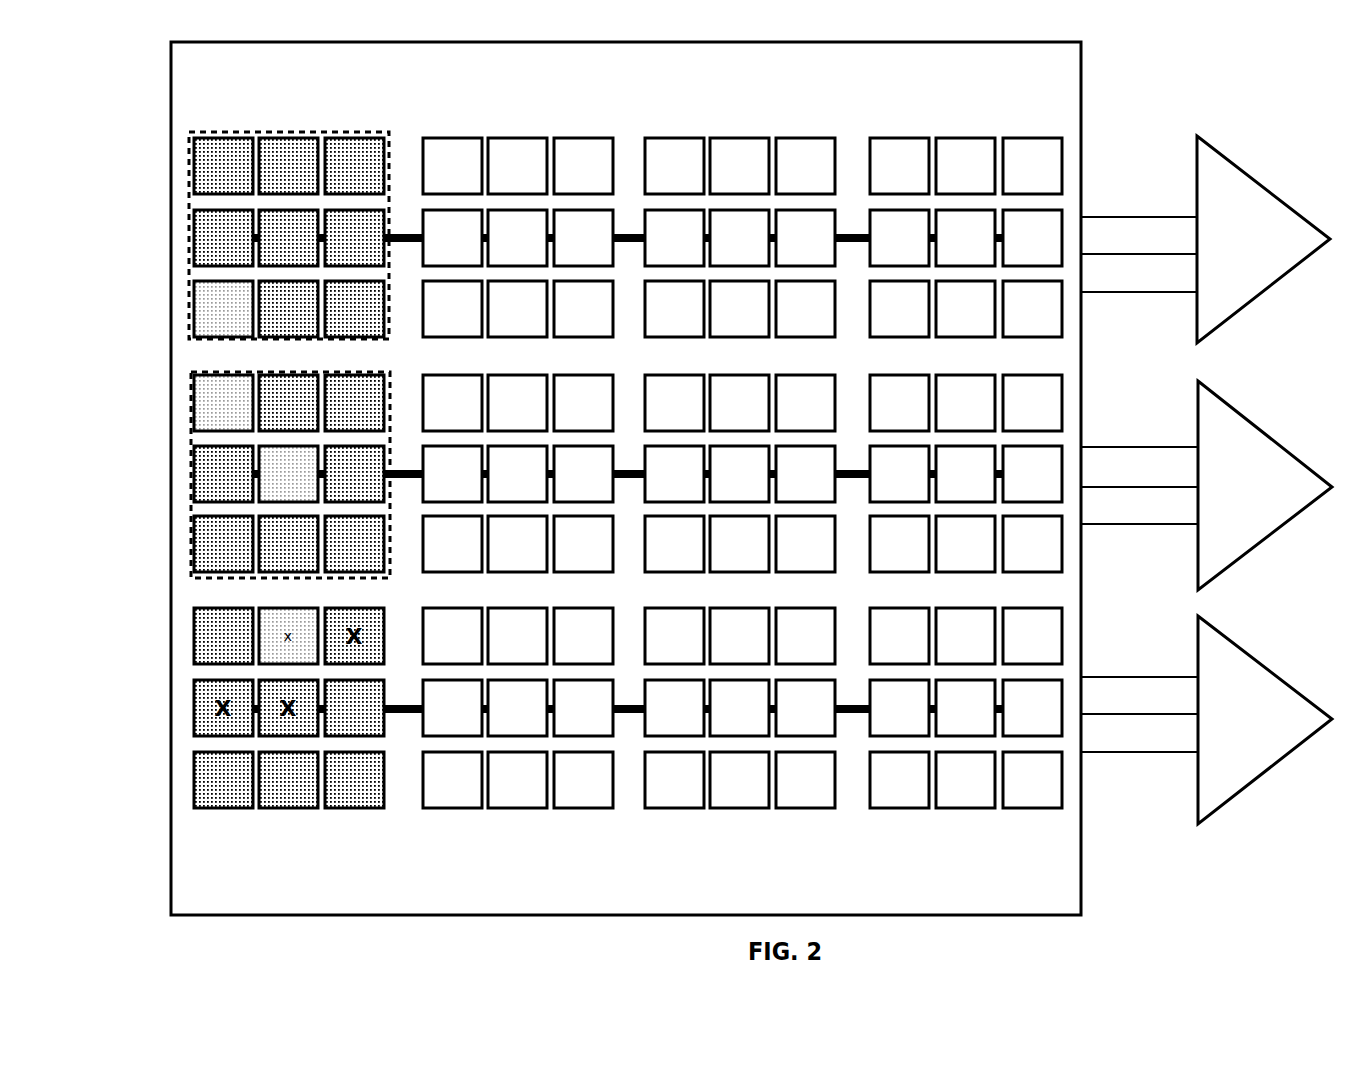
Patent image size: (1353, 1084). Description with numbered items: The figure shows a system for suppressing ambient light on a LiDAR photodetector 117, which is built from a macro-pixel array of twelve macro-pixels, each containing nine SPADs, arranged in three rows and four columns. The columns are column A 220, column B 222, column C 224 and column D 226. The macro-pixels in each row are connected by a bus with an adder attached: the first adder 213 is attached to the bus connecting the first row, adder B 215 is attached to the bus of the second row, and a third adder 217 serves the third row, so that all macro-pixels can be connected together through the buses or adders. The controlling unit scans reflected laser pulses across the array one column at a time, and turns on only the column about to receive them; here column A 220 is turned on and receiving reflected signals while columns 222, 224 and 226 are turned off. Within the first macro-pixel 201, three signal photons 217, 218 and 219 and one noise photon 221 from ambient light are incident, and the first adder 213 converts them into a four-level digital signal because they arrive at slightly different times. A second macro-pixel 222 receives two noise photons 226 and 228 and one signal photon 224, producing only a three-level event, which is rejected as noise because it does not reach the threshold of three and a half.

The photodetector 117 is at (710, 77).
The macro-pixel 201 is at (187, 163).
The adder 1 213 is at (1258, 267).
The adder B 215 is at (1259, 512).
The signal photon 217 is at (88, 356).
The signal photon 218 is at (357, 220).
The signal photon 219 is at (288, 217).
The column A 220 is at (407, 227).
The noise photon 221 is at (207, 313).
The column B 222 is at (541, 889).
The column C 224 is at (282, 553).
The column D 226 is at (272, 495).
The noise photon 228 is at (197, 402).